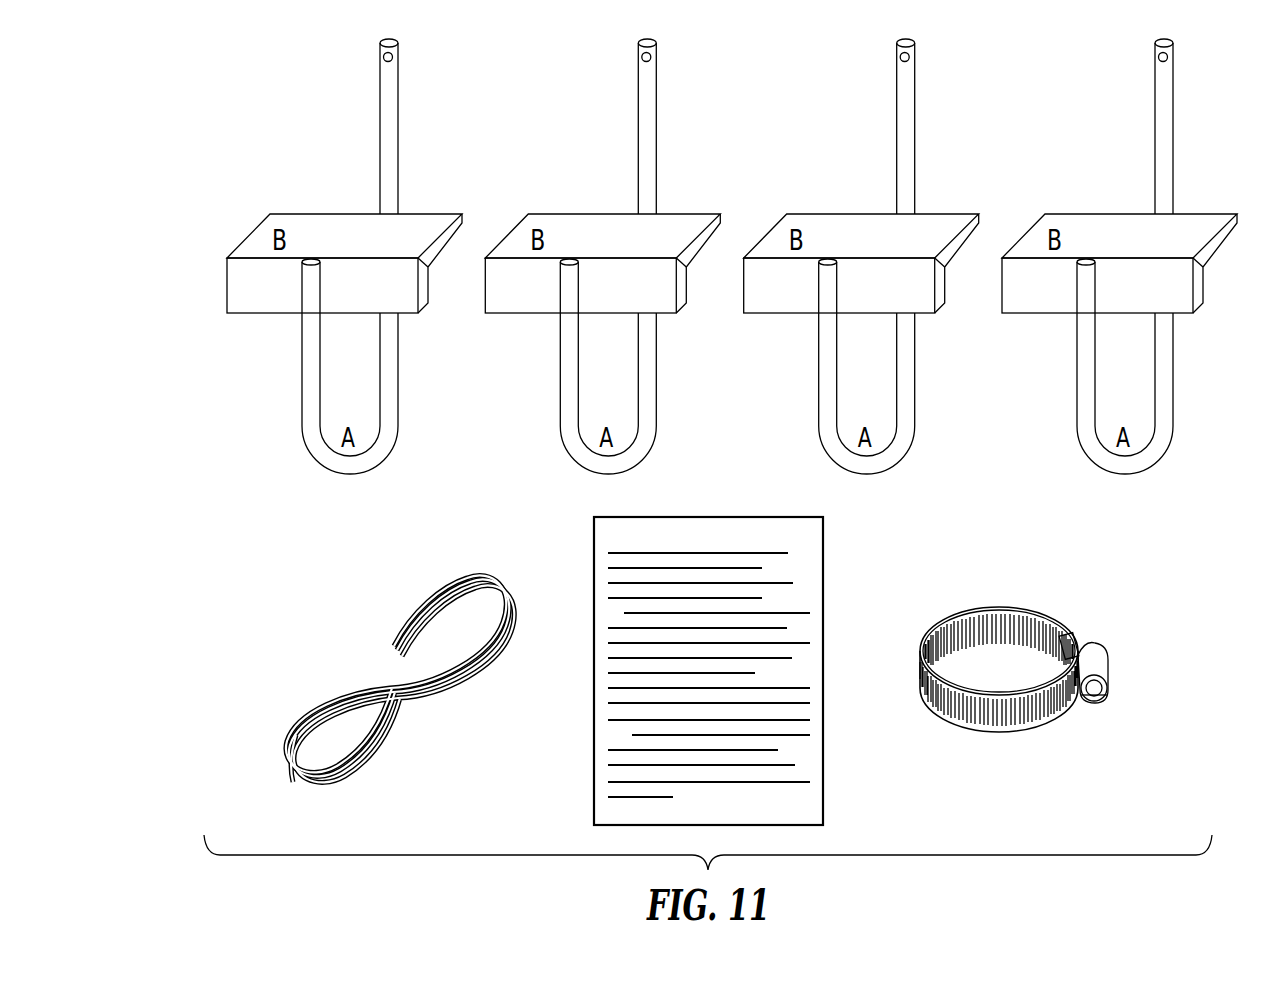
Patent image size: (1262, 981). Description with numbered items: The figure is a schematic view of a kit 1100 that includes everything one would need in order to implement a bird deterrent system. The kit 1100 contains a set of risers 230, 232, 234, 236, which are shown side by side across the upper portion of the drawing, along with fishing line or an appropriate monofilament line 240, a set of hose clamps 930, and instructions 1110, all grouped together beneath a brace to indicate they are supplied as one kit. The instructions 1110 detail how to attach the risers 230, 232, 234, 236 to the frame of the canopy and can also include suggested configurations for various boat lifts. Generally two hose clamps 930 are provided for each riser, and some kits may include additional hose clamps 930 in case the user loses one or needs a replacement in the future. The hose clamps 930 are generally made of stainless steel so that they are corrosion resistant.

The kit 1100 is at (177, 87).
The riser 230 is at (344, 256).
The riser 232 is at (602, 256).
The riser 234 is at (861, 256).
The riser 236 is at (1119, 256).
The monofilament line 240 is at (437, 600).
The instructions 1110 is at (826, 668).
The hose clamp 930 is at (1020, 608).